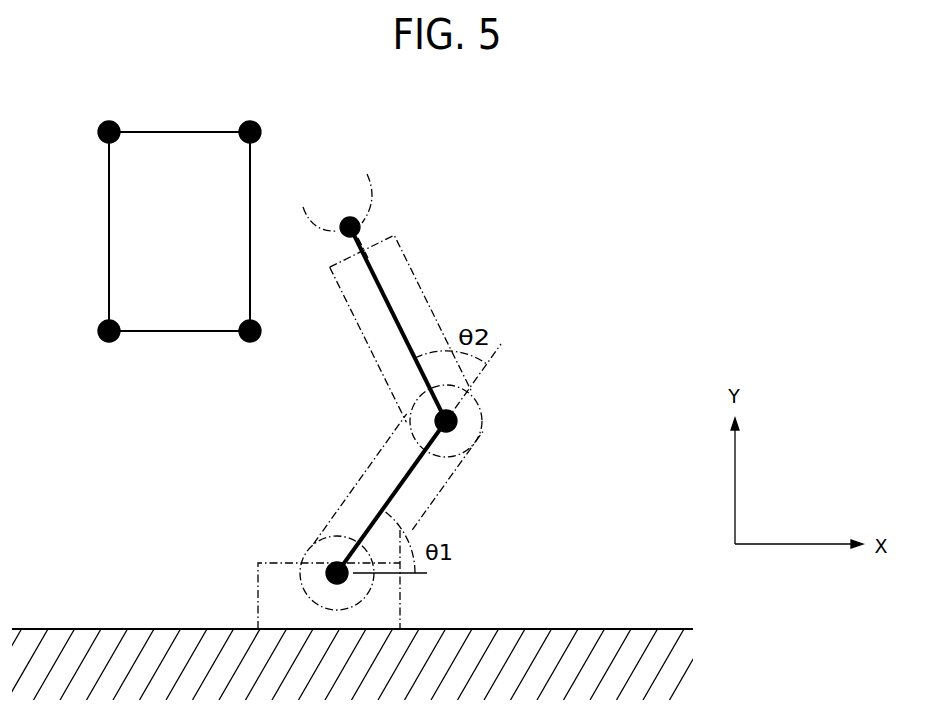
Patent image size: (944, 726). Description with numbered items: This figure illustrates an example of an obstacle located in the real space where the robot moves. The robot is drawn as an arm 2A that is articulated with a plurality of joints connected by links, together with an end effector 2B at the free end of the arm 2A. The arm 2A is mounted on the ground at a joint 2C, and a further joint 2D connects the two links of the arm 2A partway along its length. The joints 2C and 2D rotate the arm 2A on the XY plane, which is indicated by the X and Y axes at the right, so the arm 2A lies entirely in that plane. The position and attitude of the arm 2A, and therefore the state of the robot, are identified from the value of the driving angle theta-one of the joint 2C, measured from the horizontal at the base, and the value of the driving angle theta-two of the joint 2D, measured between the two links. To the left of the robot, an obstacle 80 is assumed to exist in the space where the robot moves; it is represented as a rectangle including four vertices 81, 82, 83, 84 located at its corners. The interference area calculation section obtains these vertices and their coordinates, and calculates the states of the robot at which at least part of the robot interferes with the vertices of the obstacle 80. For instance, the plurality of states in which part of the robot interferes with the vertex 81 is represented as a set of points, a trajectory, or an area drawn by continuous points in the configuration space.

The obstacle 80 is at (192, 244).
The vertex 81 is at (97, 124).
The vertex 82 is at (243, 120).
The vertex 83 is at (96, 334).
The vertex 84 is at (241, 339).
The arm 2A is at (393, 304).
The end effector 2B is at (345, 213).
The joint 2C is at (326, 580).
The joint 2D is at (458, 423).